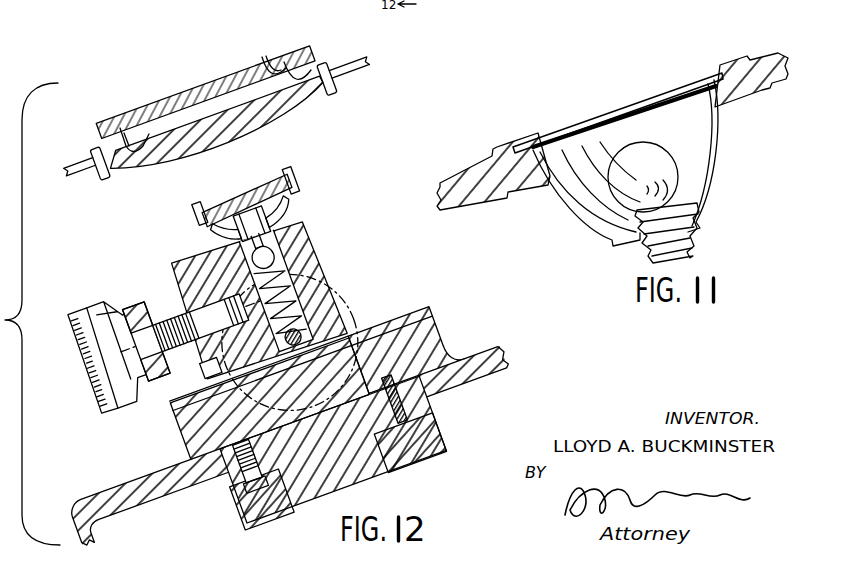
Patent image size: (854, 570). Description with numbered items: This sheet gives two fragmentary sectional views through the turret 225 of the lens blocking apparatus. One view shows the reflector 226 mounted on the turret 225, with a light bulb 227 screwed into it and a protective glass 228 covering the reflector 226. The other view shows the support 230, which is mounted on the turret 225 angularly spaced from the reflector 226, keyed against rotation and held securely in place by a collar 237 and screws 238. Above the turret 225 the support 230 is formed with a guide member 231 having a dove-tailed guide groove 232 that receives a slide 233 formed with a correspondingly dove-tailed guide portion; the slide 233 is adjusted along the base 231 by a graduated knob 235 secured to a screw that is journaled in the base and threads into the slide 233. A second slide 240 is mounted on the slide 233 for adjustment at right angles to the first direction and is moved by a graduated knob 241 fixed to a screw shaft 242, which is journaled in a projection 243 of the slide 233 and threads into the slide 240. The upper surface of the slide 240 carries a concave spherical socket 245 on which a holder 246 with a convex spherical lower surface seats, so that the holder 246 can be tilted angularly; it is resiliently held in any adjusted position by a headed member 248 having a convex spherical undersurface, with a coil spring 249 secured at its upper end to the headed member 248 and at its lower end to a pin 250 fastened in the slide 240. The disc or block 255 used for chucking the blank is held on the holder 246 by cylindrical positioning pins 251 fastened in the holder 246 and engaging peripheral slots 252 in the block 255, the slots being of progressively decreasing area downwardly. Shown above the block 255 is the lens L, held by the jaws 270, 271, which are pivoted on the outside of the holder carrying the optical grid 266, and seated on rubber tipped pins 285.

In FIG. 12, the turret 225 is at (137, 483).
In FIG. 11, the turret 225 is at (732, 62).
In FIG. 11, the reflector 226 is at (708, 178).
In FIG. 11, the light bulb 227 is at (650, 150).
In FIG. 11, the protective glass 228 is at (655, 95).
In FIG. 12, the support 230 is at (373, 473).
In FIG. 12, the guide member 231 is at (432, 322).
In FIG. 12, the dove-tailed guide groove 232 is at (383, 327).
In FIG. 12, the slide 233 is at (173, 423).
In FIG. 12, the graduated knob 235 is at (207, 370).
In FIG. 12, the collar 237 is at (405, 458).
In FIG. 12, the screws 238 is at (287, 507).
In FIG. 12, the second slide 240 is at (182, 260).
In FIG. 12, the graduated knob 241 is at (80, 360).
In FIG. 12, the screw shaft 242 is at (170, 313).
In FIG. 12, the projection 243 is at (147, 373).
In FIG. 12, the concave spherical socket 245 is at (290, 207).
In FIG. 12, the holder 246 is at (212, 232).
In FIG. 12, the headed member 248 is at (258, 187).
In FIG. 12, the coil spring 249 is at (313, 243).
In FIG. 12, the pin 250 is at (300, 337).
In FIG. 12, the cylindrical positioning pins 251 is at (290, 177).
In FIG. 12, the peripheral slots 252 is at (197, 207).
In FIG. 12, the block 255 is at (227, 207).
In FIG. 12, the optical grid 266 is at (203, 87).
In FIG. 12, the jaw 270 is at (90, 177).
In FIG. 12, the jaw 271 is at (352, 77).
In FIG. 12, the rubber tipped pins 285 is at (263, 70).
In FIG. 12, the lens L is at (298, 103).